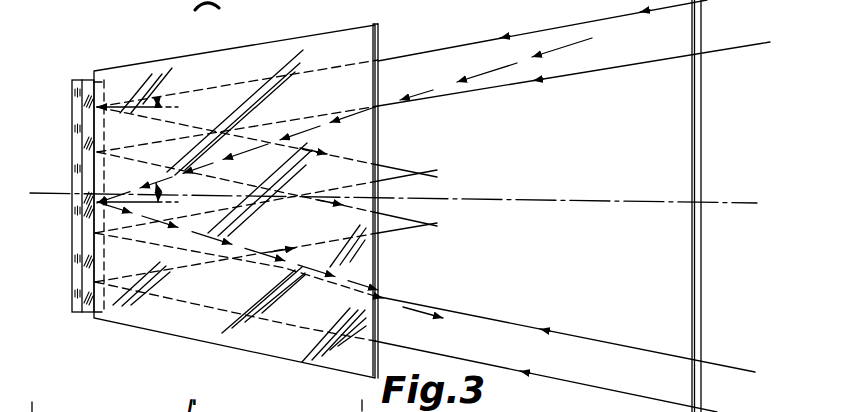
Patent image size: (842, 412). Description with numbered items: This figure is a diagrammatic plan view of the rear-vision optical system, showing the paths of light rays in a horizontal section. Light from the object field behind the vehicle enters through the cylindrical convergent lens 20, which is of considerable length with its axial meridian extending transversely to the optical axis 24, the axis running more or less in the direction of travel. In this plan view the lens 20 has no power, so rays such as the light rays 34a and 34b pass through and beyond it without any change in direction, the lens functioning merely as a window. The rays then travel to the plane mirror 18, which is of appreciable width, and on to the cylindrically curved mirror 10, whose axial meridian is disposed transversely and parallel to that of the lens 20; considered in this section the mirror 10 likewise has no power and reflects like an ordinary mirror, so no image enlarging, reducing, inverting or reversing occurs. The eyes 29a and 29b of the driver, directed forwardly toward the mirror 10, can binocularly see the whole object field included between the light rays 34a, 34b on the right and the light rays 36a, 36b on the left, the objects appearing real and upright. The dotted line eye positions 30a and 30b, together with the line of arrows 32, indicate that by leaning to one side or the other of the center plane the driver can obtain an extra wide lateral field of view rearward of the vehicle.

The cylindrically curved mirror 10 is at (93, 78).
The plane mirror 18 is at (238, 48).
The cylindrical convergent lens 20 is at (702, 287).
The optical axis 24 is at (659, 197).
The eye of the driver 29a is at (441, 164).
The eye of the driver 29b is at (441, 214).
The dotted line eye position 30a is at (444, 288).
The dotted line eye position 30b is at (432, 334).
The line of arrows 32 is at (562, 53).
The light ray 34a is at (738, 7).
The light ray 34b is at (733, 50).
The light ray 36a is at (731, 366).
The light ray 36b is at (737, 411).